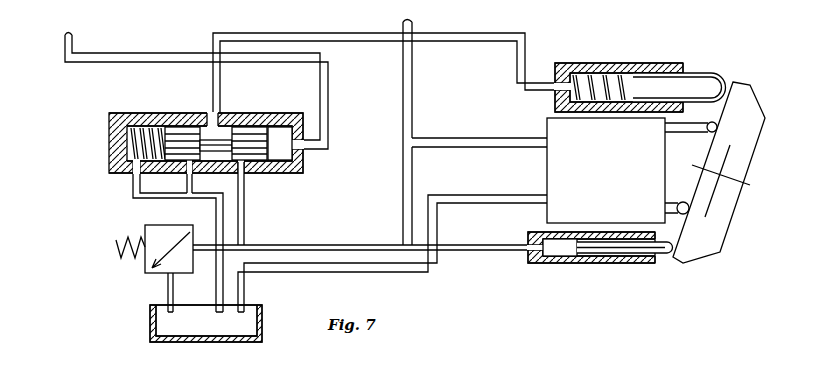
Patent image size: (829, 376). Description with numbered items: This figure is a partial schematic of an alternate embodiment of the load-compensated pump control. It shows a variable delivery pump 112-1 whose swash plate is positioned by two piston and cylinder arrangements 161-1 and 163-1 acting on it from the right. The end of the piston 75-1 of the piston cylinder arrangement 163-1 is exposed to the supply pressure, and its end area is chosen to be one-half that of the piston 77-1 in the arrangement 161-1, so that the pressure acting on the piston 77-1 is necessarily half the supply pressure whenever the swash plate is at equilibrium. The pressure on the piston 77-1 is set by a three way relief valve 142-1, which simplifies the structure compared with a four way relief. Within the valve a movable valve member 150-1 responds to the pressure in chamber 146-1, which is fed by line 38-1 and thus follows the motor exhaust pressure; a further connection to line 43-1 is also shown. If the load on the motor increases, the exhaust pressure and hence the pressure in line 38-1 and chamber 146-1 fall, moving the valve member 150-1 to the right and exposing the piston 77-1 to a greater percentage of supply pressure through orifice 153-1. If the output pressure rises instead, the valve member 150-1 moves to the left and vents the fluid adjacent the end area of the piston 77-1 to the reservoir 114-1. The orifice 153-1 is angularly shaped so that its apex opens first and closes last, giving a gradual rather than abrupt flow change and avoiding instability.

The line 38-1 is at (188, 79).
The conduit to element 43-1 is at (466, 122).
The three way relief valve 142-1 is at (146, 112).
The movable valve member 150-1 is at (224, 130).
The chamber 146-1 is at (283, 149).
The orifice 153-1 is at (251, 175).
The reservoir 114-1 is at (152, 327).
The variable delivery pump 112-1 is at (556, 167).
The piston and cylinder arrangement 161-1 is at (612, 58).
The piston 77-1 is at (702, 73).
The piston cylinder arrangement 163-1 is at (600, 263).
The piston 75-1 is at (641, 248).